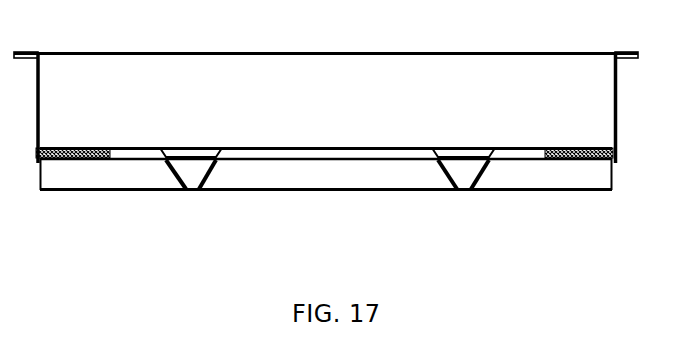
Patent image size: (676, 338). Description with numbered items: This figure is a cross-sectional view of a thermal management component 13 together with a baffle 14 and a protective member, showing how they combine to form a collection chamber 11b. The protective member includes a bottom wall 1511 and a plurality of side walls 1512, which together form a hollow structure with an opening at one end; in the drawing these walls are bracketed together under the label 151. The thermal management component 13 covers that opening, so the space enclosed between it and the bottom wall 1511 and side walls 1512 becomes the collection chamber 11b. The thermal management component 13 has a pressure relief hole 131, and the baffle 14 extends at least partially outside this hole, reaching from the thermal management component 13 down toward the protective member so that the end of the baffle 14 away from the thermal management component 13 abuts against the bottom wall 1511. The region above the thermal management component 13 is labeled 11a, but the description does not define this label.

The upper housing 11a is at (224, 72).
The collection chamber 11b is at (105, 173).
The thermal management component 13 is at (403, 150).
The pressure relief hole 131 is at (462, 157).
The baffle 14 is at (476, 183).
The bottom frame 151 is at (346, 212).
The bottom wall 1511 is at (567, 190).
The side walls 1512 is at (624, 194).